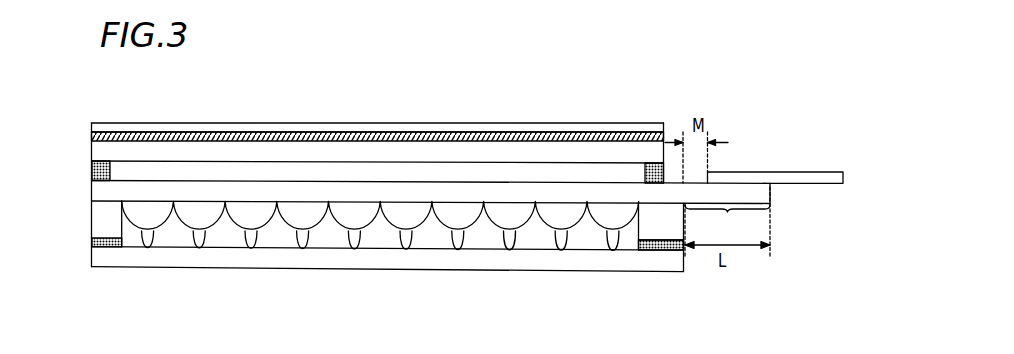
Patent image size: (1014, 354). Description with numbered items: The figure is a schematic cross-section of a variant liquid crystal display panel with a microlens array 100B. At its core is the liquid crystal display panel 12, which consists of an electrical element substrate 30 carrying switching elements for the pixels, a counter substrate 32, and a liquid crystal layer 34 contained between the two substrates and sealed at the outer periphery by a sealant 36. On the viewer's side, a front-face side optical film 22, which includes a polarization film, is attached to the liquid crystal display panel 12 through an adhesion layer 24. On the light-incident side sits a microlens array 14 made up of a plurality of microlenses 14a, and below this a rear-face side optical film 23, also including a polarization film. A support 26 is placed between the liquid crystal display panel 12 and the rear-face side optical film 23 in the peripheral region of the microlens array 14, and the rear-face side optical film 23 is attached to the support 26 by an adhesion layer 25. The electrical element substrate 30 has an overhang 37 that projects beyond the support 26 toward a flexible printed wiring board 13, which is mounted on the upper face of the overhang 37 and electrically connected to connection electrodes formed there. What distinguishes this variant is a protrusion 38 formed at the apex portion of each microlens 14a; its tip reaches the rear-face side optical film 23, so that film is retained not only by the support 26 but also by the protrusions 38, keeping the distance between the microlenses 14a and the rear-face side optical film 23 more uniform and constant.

The variant liquid crystal display panel with a microlens array 100B is at (669, 101).
The front-face side optical film 22 is at (524, 123).
The adhesion layer 24 is at (90, 135).
The liquid crystal display panel 12 is at (47, 145).
The counter substrate 32 is at (93, 151).
The liquid crystal layer 34 is at (118, 167).
The sealant 36 is at (107, 160).
The electrical element substrate 30 is at (97, 188).
The flexible printed wiring board 13 is at (797, 181).
The overhang 37 is at (727, 222).
The rear-face side optical film 23 is at (503, 263).
The microlens array 14 is at (388, 225).
The microlens 14a is at (291, 248).
The protrusion 38 is at (199, 248).
The support 26 is at (633, 228).
The adhesion layer 25 is at (661, 250).